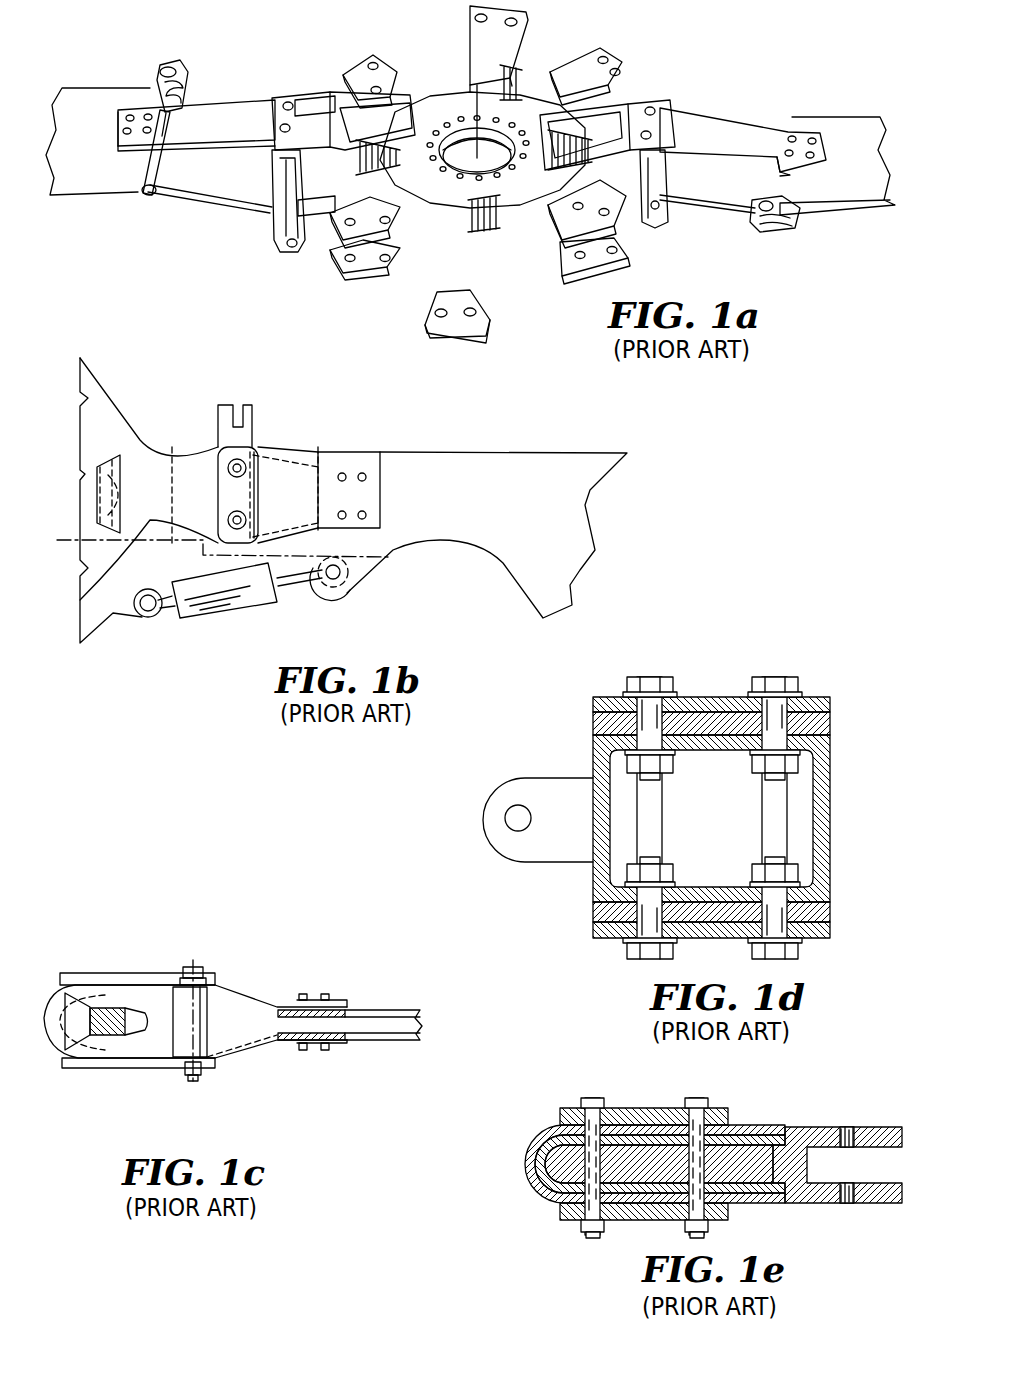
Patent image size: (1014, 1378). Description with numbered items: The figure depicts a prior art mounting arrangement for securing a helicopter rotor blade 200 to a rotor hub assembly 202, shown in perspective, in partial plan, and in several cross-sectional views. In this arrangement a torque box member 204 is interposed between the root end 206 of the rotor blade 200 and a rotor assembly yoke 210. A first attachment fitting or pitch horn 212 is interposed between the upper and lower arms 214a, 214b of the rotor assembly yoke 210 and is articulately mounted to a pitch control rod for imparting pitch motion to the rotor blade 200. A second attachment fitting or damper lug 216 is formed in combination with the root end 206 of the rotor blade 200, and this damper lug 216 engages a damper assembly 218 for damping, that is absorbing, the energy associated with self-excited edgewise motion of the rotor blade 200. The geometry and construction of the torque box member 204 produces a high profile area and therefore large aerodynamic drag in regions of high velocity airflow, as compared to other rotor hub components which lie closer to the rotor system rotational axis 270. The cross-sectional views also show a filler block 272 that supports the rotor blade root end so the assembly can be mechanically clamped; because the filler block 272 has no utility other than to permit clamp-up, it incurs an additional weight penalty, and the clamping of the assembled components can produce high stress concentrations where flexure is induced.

In FIG. 1A, the helicopter rotor blade 200 is at (80, 105).
In FIG. 1B, the helicopter rotor blade 200 is at (443, 470).
In FIG. 1C, the helicopter rotor blade 200 is at (405, 1005).
In FIG. 1A, the rotor hub assembly 202 is at (640, 32).
In FIG. 1B, the rotor hub assembly 202 is at (240, 390).
In FIG. 1C, the rotor hub assembly 202 is at (265, 928).
In FIG. 1A, the torque box member 204 is at (215, 180).
In FIG. 1B, the torque box member 204 is at (280, 457).
In FIG. 1C, the torque box member 204 is at (240, 1040).
In FIG. 1D, the torque box member 204 is at (830, 722).
In FIG. 1E, the torque box member 204 is at (562, 1110).
In FIG. 1A, the root end 206 is at (135, 178).
In FIG. 1B, the root end 206 is at (348, 455).
In FIG. 1C, the root end 206 is at (335, 1012).
In FIG. 1E, the root end 206 is at (533, 1168).
In FIG. 1A, the rotor assembly yoke 210 is at (308, 105).
In FIG. 1B, the rotor assembly yoke 210 is at (210, 457).
In FIG. 1C, the rotor assembly yoke 210 is at (122, 1068).
In FIG. 1D, the rotor assembly yoke 210 is at (828, 695).
In FIG. 1A, the pitch horn 212 is at (272, 222).
In FIG. 1B, the pitch horn 212 is at (220, 415).
In FIG. 1D, the pitch horn 212 is at (568, 840).
In FIG. 1A, the upper arm 214a is at (330, 112).
In FIG. 1C, the upper arm 214a is at (130, 972).
In FIG. 1D, the upper arm 214a is at (598, 697).
In FIG. 1A, the lower arm 214b is at (318, 214).
In FIG. 1C, the lower arm 214b is at (153, 1068).
In FIG. 1D, the lower arm 214b is at (830, 930).
In FIG. 1A, the damper lug 216 is at (172, 68).
In FIG. 1B, the damper lug 216 is at (345, 592).
In FIG. 1C, the damper lug 216 is at (312, 1046).
In FIG. 1E, the damper lug 216 is at (878, 1127).
In FIG. 1B, the damper assembly 218 is at (205, 616).
In FIG. 1A, the rotor system rotational axis 270 is at (470, 95).
In FIG. 1E, the filler block 272 is at (648, 1150).